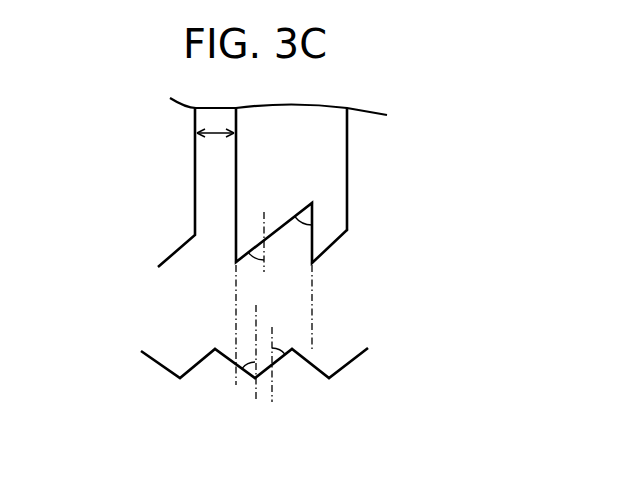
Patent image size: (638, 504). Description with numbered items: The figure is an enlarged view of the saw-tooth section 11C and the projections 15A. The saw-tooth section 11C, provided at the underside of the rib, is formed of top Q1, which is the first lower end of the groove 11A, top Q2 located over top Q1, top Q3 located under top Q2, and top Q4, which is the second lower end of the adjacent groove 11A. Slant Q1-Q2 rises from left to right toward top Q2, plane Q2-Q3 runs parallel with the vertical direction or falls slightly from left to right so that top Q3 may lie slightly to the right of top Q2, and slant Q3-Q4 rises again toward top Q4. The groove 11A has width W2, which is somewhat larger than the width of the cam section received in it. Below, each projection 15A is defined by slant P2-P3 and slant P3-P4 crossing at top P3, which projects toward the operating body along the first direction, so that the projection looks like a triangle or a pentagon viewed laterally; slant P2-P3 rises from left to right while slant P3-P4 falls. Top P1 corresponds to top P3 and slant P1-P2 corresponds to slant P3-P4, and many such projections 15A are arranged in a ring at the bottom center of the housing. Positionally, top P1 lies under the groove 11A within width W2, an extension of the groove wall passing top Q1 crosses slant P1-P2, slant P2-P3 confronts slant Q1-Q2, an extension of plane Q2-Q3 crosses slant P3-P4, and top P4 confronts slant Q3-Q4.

The width of groove W2 is at (197, 132).
The groove 11A is at (210, 192).
The saw-tooth section 11C is at (335, 203).
The top Q1 is at (236, 262).
The top Q2 is at (310, 201).
The top Q3 is at (313, 264).
The top Q4 is at (347, 230).
The projection 15A is at (195, 363).
The top P1 is at (212, 355).
The top P2 is at (252, 380).
The top P3 is at (293, 352).
The top P4 is at (329, 380).